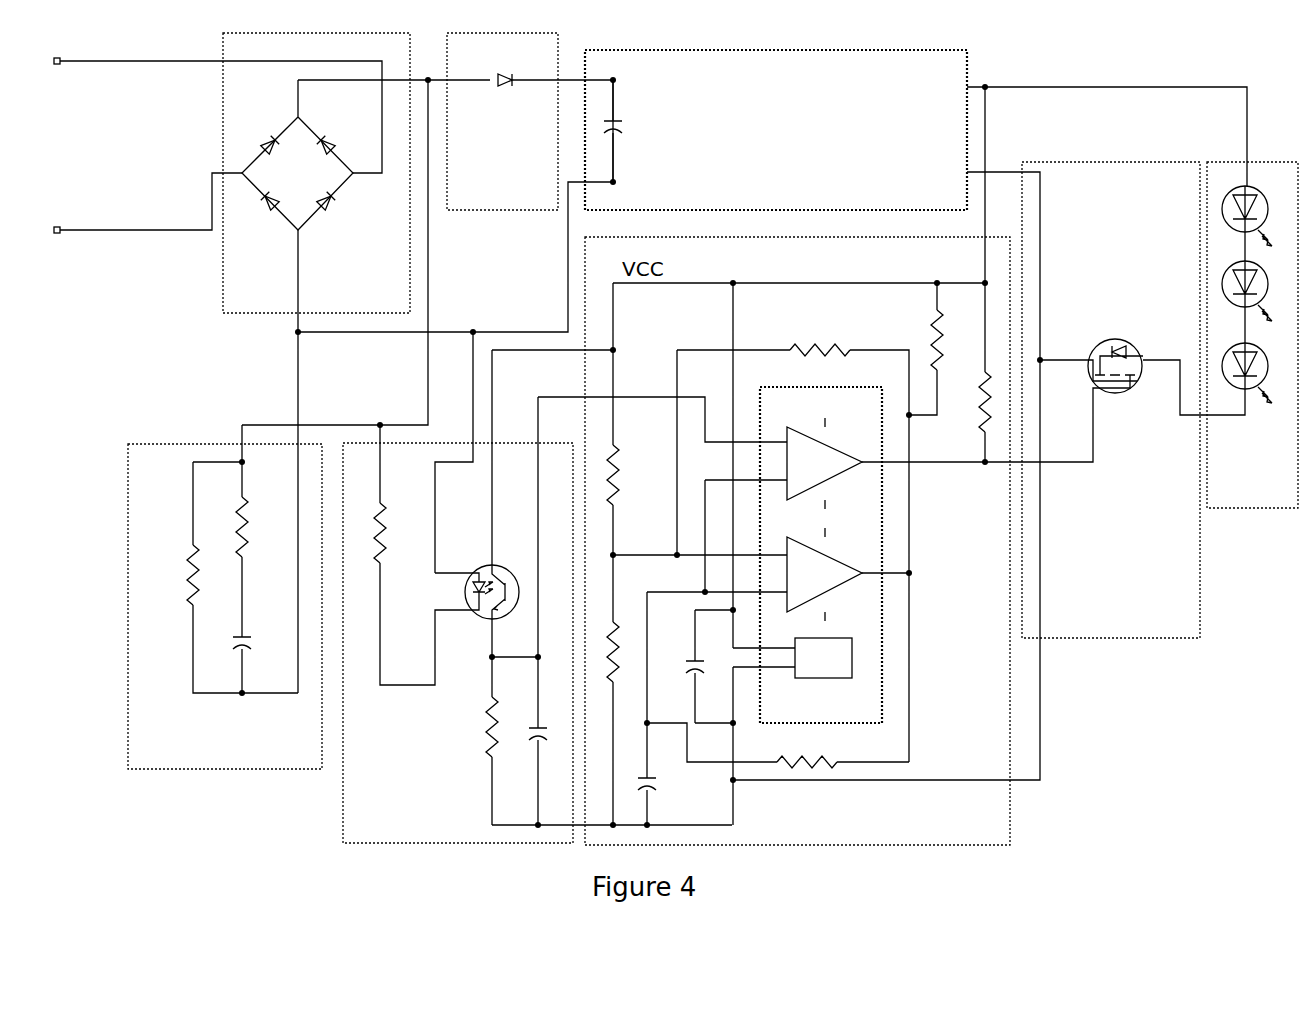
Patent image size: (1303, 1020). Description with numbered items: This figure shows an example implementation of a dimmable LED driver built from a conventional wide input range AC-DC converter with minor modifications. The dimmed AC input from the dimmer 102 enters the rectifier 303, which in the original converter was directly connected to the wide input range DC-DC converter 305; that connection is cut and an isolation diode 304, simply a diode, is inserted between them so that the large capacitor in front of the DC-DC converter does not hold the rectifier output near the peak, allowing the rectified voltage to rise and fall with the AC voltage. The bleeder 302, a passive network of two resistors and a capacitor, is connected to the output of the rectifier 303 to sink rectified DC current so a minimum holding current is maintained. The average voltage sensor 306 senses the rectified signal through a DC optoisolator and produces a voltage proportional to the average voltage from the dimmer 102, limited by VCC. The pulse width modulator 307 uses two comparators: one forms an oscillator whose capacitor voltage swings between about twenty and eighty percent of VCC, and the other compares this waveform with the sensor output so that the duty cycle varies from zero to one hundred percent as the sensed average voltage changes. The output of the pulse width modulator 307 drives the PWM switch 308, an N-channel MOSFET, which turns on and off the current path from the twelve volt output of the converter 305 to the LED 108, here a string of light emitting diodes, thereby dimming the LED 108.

The dimmer 102 is at (206, 145).
The bleeder 302 is at (225, 597).
The rectifier 303 is at (316, 173).
The isolation diode 304 is at (502, 121).
The wide input range DC-DC converter 305 is at (778, 130).
The average voltage sensor 306 is at (458, 587).
The pulse width modulator 307 is at (797, 541).
The PWM switch 308 is at (1111, 400).
The LED 108 is at (1252, 335).